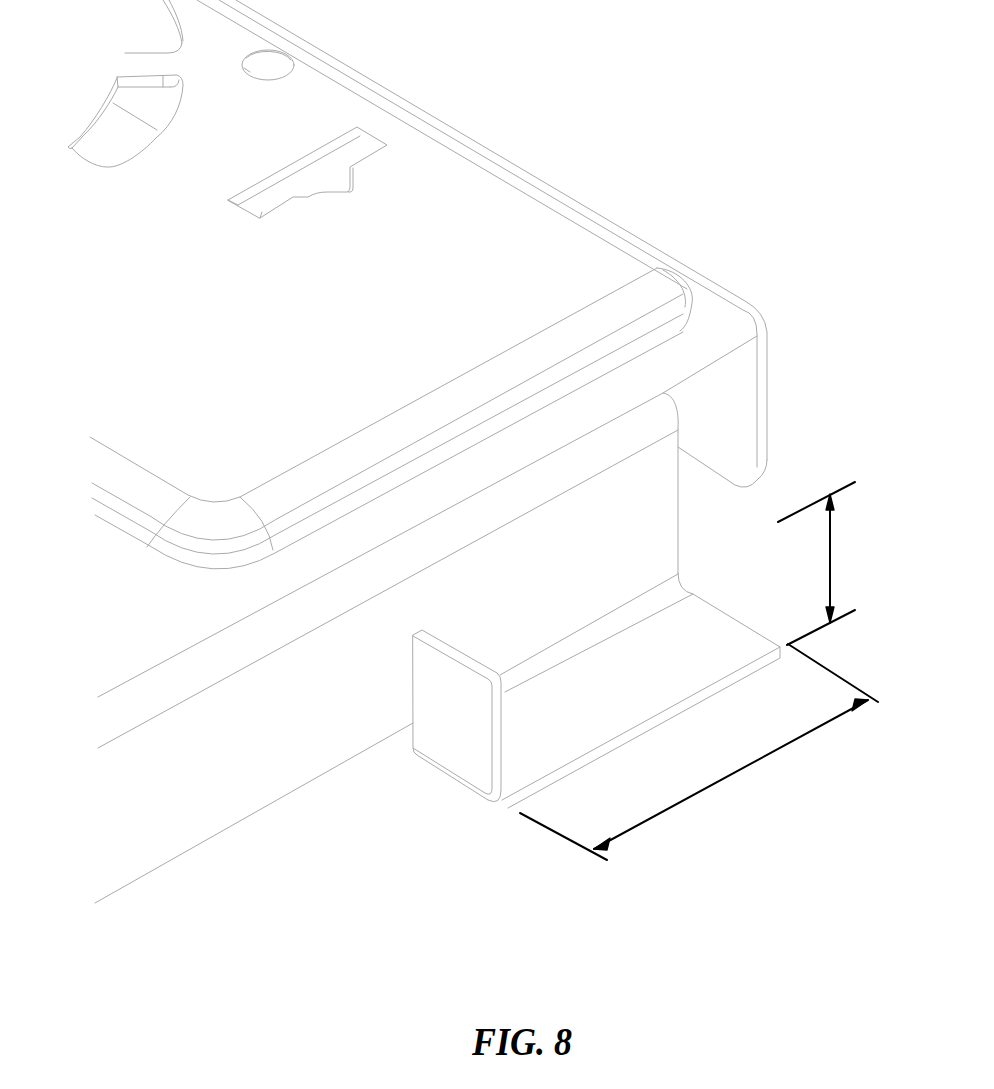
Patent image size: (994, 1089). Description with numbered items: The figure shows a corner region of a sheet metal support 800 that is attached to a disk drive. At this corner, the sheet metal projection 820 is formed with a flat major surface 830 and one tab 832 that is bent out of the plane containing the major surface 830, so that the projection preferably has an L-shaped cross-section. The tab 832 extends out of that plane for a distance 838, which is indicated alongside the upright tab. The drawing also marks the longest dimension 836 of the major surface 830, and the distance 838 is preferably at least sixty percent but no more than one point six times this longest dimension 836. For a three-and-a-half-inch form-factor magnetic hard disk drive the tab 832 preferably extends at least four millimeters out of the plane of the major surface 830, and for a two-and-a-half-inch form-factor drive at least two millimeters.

The sheet metal support 800 is at (440, 187).
The sheet metal projection 820 is at (481, 829).
The major surface 830 is at (641, 690).
The tab 832 is at (457, 716).
The longest dimension 836 is at (699, 752).
The distance 838 is at (829, 563).